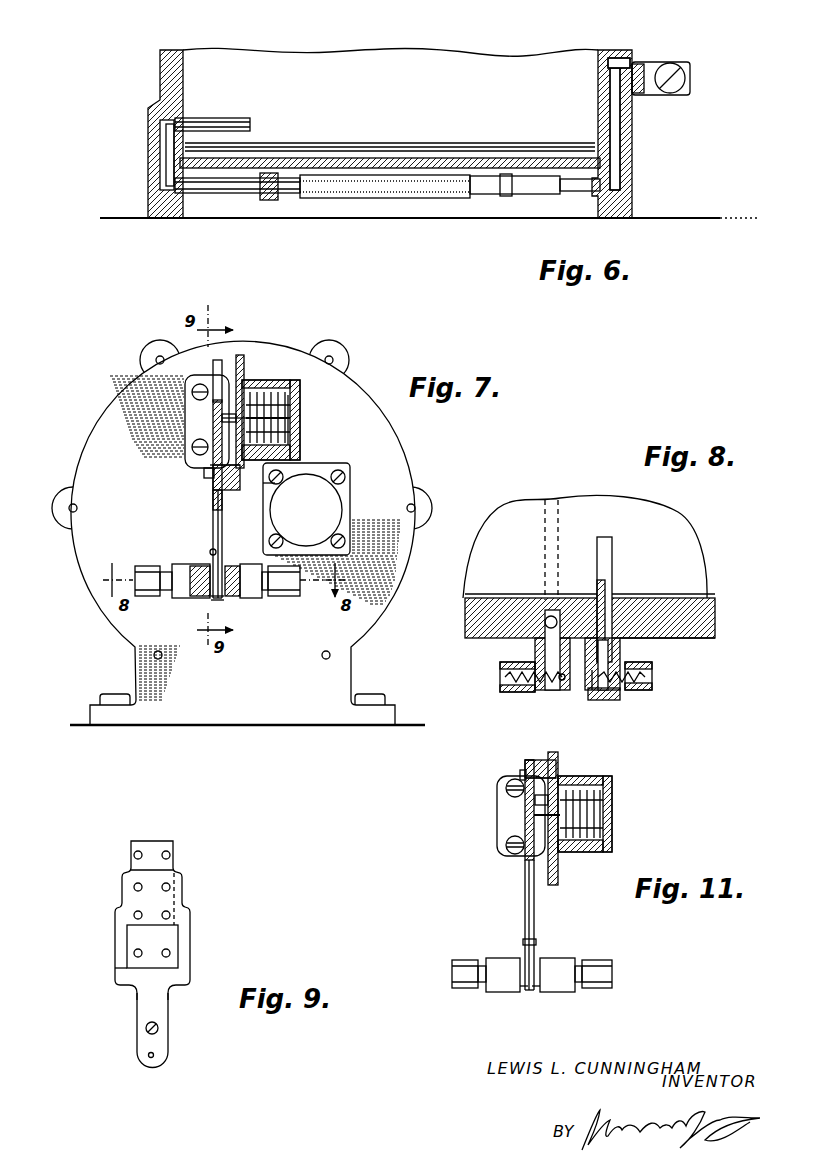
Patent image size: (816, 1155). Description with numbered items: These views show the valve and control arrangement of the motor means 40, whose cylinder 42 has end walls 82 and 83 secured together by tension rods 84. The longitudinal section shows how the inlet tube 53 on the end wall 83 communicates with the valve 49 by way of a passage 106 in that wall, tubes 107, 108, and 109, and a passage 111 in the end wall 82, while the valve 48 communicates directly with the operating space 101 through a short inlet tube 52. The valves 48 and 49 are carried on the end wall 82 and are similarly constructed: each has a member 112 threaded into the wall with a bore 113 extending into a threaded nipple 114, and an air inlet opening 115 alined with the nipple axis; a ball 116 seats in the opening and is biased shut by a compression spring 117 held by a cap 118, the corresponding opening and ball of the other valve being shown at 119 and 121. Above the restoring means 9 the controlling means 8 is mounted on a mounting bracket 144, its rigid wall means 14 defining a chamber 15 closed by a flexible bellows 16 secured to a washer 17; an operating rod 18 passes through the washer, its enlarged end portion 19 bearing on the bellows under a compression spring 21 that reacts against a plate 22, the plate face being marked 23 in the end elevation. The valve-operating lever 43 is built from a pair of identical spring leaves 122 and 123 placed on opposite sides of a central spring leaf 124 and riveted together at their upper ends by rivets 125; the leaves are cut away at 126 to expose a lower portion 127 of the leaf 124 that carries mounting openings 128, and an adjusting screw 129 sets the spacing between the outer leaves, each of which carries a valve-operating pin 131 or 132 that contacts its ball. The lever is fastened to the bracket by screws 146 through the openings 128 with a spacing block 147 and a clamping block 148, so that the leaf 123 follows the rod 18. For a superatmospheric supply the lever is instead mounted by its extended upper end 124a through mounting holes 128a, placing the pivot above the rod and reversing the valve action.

In FIG. 6, the motor means 40 is at (458, 50).
In FIG. 6, the cylinder 42 is at (360, 158).
In FIG. 7, the valve-operating lever 43 is at (211, 529).
In FIG. 9, the valve-operating lever 43 is at (136, 1013).
In FIG. 11, the valve-operating lever 43 is at (524, 900).
In FIG. 7, the valve 48 is at (263, 599).
In FIG. 8, the valve 48 is at (616, 701).
In FIG. 11, the valve 48 is at (579, 957).
In FIG. 6, the valve 49 is at (671, 62).
In FIG. 7, the valve 49 is at (172, 599).
In FIG. 8, the valve 49 is at (531, 693).
In FIG. 11, the valve 49 is at (495, 957).
In FIG. 8, the short inlet tube 52 is at (613, 558).
In FIG. 6, the inlet tube 53 is at (224, 118).
In FIG. 6, the end wall 82 is at (627, 50).
In FIG. 7, the end wall 82 is at (398, 464).
In FIG. 8, the end wall 82 is at (716, 620).
In FIG. 6, the end wall 83 is at (160, 72).
In FIG. 7, the tension rods 84 is at (73, 500).
In FIG. 7, the controlling means 8 is at (256, 378).
In FIG. 11, the controlling means 8 is at (616, 791).
In FIG. 7, the restoring means 9 is at (306, 494).
In FIG. 7, the rigid wall means 14 is at (266, 388).
In FIG. 11, the rigid wall means 14 is at (590, 853).
In FIG. 7, the chamber 15 is at (278, 390).
In FIG. 11, the chamber 15 is at (613, 836).
In FIG. 7, the flexible wall 16 is at (298, 401).
In FIG. 11, the flexible wall 16 is at (613, 810).
In FIG. 7, the washer 17 is at (238, 447).
In FIG. 11, the washer 17 is at (558, 858).
In FIG. 7, the operating rod 18 is at (246, 419).
In FIG. 11, the operating rod 18 is at (546, 816).
In FIG. 7, the enlarged end portion 19 is at (300, 435).
In FIG. 7, the compression spring 21 is at (289, 427).
In FIG. 7, the plate 22 is at (266, 483).
In FIG. 11, the plate 22 is at (557, 770).
In FIG. 7, the opening 23 is at (313, 470).
In FIG. 8, the operating space 101 is at (580, 516).
In FIG. 6, the passage 106 is at (167, 152).
In FIG. 6, the tube 107 is at (219, 194).
In FIG. 6, the tube 108 is at (405, 198).
In FIG. 6, the tube 109 is at (552, 194).
In FIG. 8, the tube 109 is at (544, 556).
In FIG. 6, the passage 111 is at (616, 148).
In FIG. 8, the passage 111 is at (551, 616).
In FIG. 8, the member 112 is at (622, 648).
In FIG. 8, the bore 113 is at (606, 626).
In FIG. 8, the threaded nipple 114 is at (642, 692).
In FIG. 8, the air inlet opening 115 is at (589, 700).
In FIG. 7, the ball 116 is at (236, 597).
In FIG. 8, the ball 116 is at (598, 700).
In FIG. 8, the compression spring 117 is at (653, 670).
In FIG. 8, the cap 118 is at (653, 686).
In FIG. 11, the cap 118 is at (612, 978).
In FIG. 8, the air inlet opening 119 is at (573, 693).
In FIG. 7, the ball 121 is at (195, 565).
In FIG. 8, the ball 121 is at (549, 693).
In FIG. 7, the spring leaf 122 is at (213, 512).
In FIG. 9, the spring leaf 122 is at (118, 968).
In FIG. 11, the spring leaf 122 is at (525, 918).
In FIG. 7, the spring leaf 123 is at (223, 528).
In FIG. 11, the spring leaf 123 is at (535, 915).
In FIG. 7, the spring leaf 124 is at (220, 362).
In FIG. 9, the spring leaf 124 is at (176, 863).
In FIG. 11, the spring leaf 124 is at (524, 874).
In FIG. 7, the upper end of spring leaf 124a is at (213, 376).
In FIG. 9, the upper end of spring leaf 124a is at (155, 841).
In FIG. 11, the upper end of spring leaf 124a is at (524, 768).
In FIG. 9, the rivets 125 is at (170, 887).
In FIG. 7, the cut-away portion 126 is at (213, 492).
In FIG. 9, the cut-away portion 126 is at (127, 936).
In FIG. 9, the lower portion 127 is at (165, 941).
In FIG. 9, the mounting openings 128 is at (168, 953).
In FIG. 9, the mounting holes 128a is at (134, 855).
In FIG. 7, the adjusting screw 129 is at (223, 553).
In FIG. 9, the adjusting screw 129 is at (159, 1028).
In FIG. 11, the adjusting screw 129 is at (537, 942).
In FIG. 7, the valve-operating pin 131 is at (213, 598).
In FIG. 9, the valve-operating pin 131 is at (150, 1058).
In FIG. 11, the valve-operating pin 131 is at (522, 985).
In FIG. 7, the valve-operating pin 132 is at (222, 600).
In FIG. 11, the valve-operating pin 132 is at (541, 985).
In FIG. 7, the mounting bracket 144 is at (184, 386).
In FIG. 11, the mounting bracket 144 is at (496, 800).
In FIG. 7, the screws 146 is at (204, 473).
In FIG. 11, the screws 146 is at (521, 776).
In FIG. 7, the spacing block 147 is at (232, 491).
In FIG. 11, the spacing block 147 is at (540, 760).
In FIG. 7, the clamping block 148 is at (212, 468).